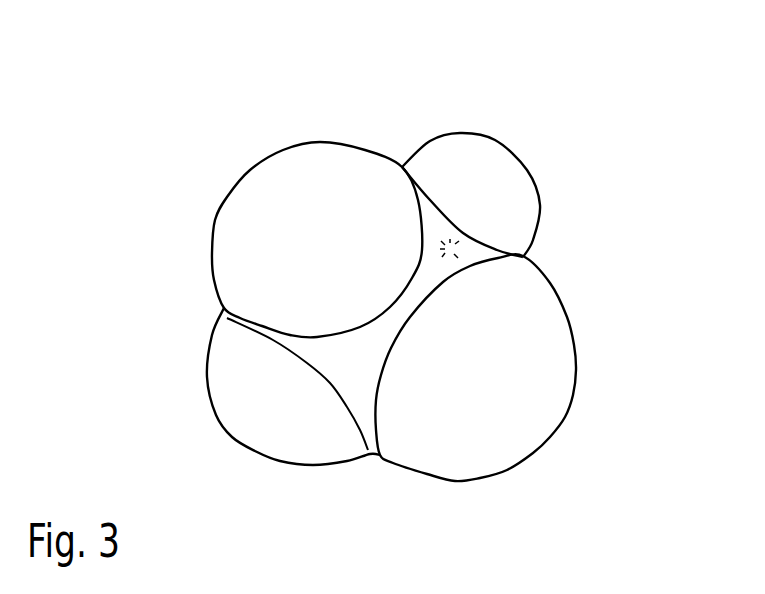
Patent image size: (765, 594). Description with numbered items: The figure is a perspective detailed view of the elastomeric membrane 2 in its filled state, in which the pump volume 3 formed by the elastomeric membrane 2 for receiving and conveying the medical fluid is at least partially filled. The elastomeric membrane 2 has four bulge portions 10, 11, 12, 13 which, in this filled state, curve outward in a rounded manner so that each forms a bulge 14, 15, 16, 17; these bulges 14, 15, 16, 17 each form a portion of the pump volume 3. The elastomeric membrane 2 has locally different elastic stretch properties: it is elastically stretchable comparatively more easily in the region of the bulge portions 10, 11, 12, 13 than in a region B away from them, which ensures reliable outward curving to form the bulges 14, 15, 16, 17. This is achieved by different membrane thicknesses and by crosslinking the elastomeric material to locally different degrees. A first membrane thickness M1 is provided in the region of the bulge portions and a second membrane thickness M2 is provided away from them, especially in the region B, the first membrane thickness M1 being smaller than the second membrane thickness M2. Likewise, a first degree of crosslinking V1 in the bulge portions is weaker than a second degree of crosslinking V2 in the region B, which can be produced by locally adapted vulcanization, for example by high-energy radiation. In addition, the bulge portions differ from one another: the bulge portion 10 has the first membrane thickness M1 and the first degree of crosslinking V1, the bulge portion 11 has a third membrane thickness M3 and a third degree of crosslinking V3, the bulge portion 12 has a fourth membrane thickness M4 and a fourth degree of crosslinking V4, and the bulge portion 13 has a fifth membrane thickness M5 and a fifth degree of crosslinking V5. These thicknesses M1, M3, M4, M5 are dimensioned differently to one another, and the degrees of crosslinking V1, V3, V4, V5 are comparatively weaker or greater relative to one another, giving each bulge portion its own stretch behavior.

The elastomeric membrane 2 is at (224, 67).
The pump volume 3 is at (448, 248).
The bulge portion 10 is at (463, 150).
The bulge portion 11 is at (535, 428).
The bulge portion 12 is at (230, 417).
The bulge portion 13 is at (238, 230).
The bulge 14 is at (517, 110).
The bulge 15 is at (527, 484).
The bulge 16 is at (189, 410).
The bulge 17 is at (217, 183).
The first membrane thickness M1 is at (523, 203).
The first degree of crosslinking V1 is at (527, 208).
The second membrane thickness M2 is at (337, 362).
The second degree of crosslinking V2 is at (342, 363).
The third membrane thickness M3 is at (560, 347).
The third degree of crosslinking V3 is at (560, 355).
The fourth membrane thickness M4 is at (225, 373).
The fourth degree of crosslinking V4 is at (223, 368).
The fifth membrane thickness M5 is at (347, 157).
The fifth degree of crosslinking V5 is at (335, 157).
The region B is at (350, 372).